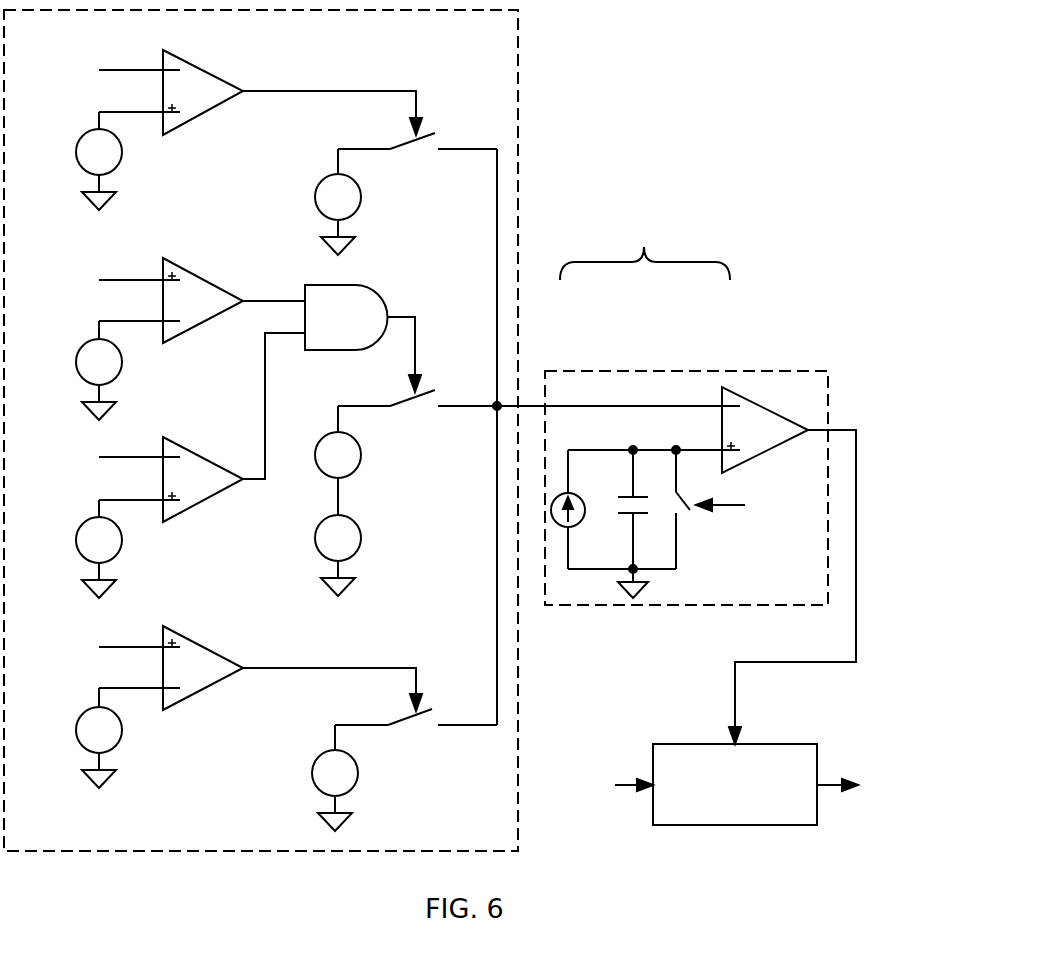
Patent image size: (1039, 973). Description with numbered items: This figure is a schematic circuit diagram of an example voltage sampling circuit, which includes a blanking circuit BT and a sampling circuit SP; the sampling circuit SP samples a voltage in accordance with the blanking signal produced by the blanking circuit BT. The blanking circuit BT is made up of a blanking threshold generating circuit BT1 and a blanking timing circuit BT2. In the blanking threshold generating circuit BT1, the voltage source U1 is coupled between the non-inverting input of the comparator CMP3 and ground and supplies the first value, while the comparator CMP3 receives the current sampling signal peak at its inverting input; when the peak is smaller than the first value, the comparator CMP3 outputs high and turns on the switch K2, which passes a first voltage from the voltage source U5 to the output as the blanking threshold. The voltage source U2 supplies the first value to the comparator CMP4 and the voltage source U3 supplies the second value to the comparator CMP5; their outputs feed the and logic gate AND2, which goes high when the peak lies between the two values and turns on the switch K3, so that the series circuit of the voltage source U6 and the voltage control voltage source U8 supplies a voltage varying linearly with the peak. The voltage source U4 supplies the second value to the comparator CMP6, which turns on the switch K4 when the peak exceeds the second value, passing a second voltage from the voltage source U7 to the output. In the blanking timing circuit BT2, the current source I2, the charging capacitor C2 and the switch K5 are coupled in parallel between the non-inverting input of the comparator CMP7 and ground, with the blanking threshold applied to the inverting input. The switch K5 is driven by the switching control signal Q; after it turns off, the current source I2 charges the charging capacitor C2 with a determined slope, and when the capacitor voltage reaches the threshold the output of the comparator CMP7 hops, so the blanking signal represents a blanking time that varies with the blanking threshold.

The comparator CMP3 is at (157, 85).
The comparator CMP4 is at (157, 294).
The comparator CMP5 is at (157, 472).
The comparator CMP6 is at (157, 661).
The comparator CMP7 is at (709, 427).
The voltage source U1 is at (98, 161).
The voltage source U2 is at (98, 370).
The voltage source U3 is at (98, 549).
The voltage source U4 is at (98, 738).
The voltage source U5 is at (316, 202).
The voltage source U6 is at (316, 555).
The voltage source U7 is at (315, 778).
The voltage control voltage source U8 is at (358, 460).
The and logic gate AND2 is at (315, 382).
The switch K2 is at (370, 139).
The switch K3 is at (530, 380).
The switch K4 is at (370, 715).
The switch K5 is at (692, 507).
The charging capacitor C2 is at (641, 522).
The current source I2 is at (581, 509).
The switching control signal Q is at (735, 507).
The sampling circuit SP is at (735, 627).
The blanking circuit BT is at (645, 247).
The blanking threshold generating circuit BT1 is at (518, 330).
The blanking timing circuit BT2 is at (685, 370).